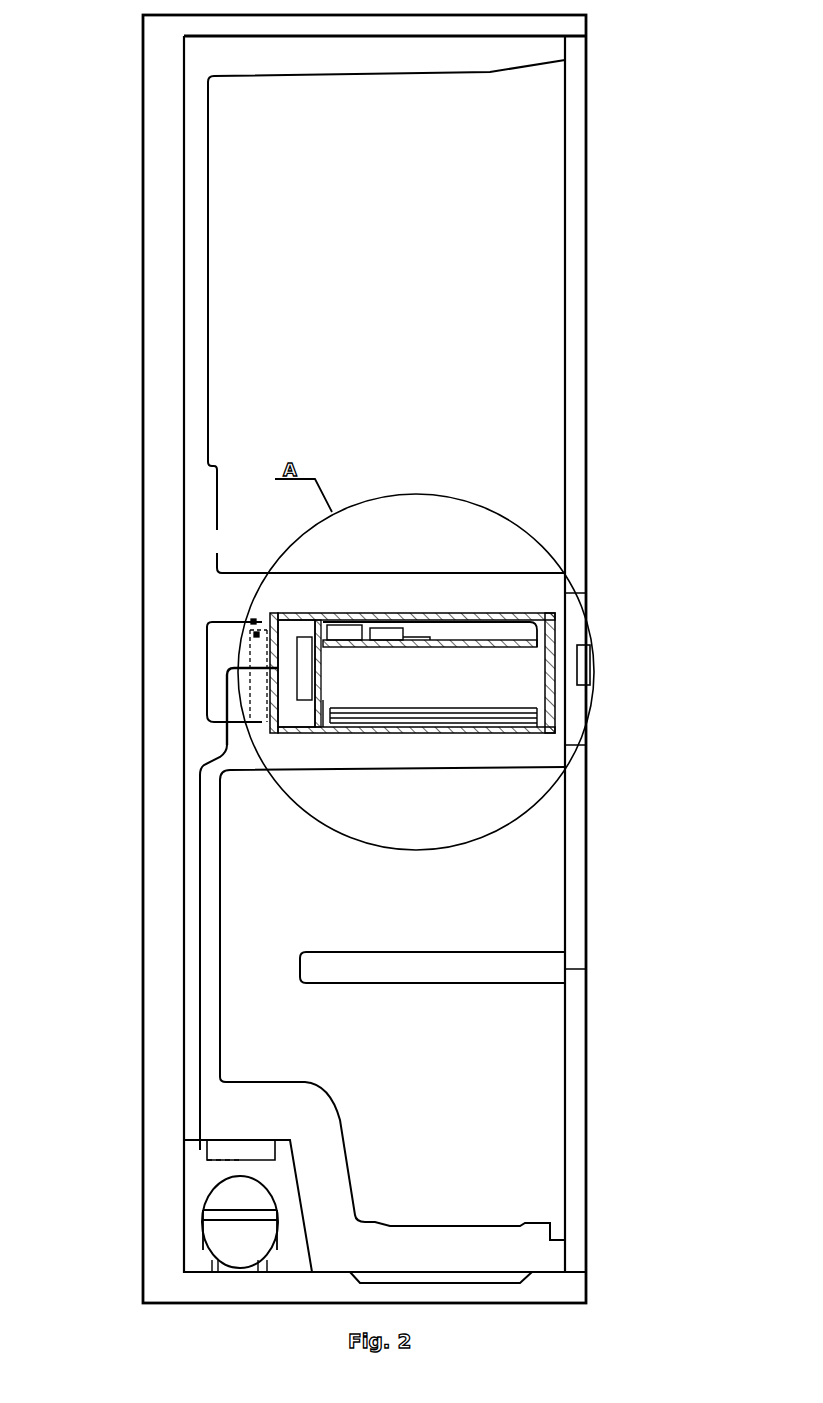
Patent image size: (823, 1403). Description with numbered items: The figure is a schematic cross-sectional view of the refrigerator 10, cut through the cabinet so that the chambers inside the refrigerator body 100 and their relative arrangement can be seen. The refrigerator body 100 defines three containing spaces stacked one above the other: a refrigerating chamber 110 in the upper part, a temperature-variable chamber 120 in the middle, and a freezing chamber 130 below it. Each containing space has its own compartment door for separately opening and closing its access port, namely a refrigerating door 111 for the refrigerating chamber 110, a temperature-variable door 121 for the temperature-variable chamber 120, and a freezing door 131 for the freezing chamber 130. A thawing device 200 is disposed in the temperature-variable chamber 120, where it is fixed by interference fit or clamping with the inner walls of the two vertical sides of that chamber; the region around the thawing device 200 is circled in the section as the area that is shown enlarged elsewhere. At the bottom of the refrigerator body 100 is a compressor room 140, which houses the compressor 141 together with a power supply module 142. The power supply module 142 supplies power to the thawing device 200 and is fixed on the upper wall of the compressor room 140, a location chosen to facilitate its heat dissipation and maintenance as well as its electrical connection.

The refrigerator 10 is at (118, 15).
The refrigerator body 100 is at (202, 552).
The refrigerating chamber 110 is at (533, 380).
The refrigerating door 111 is at (573, 212).
The temperature-variable chamber 120 is at (558, 642).
The temperature-variable door 121 is at (572, 717).
The thawing device 200 is at (519, 696).
The freezing chamber 130 is at (526, 1158).
The freezing door 131 is at (574, 1050).
The compressor room 140 is at (200, 1190).
The compressor 141 is at (232, 1230).
The power supply module 142 is at (232, 1150).